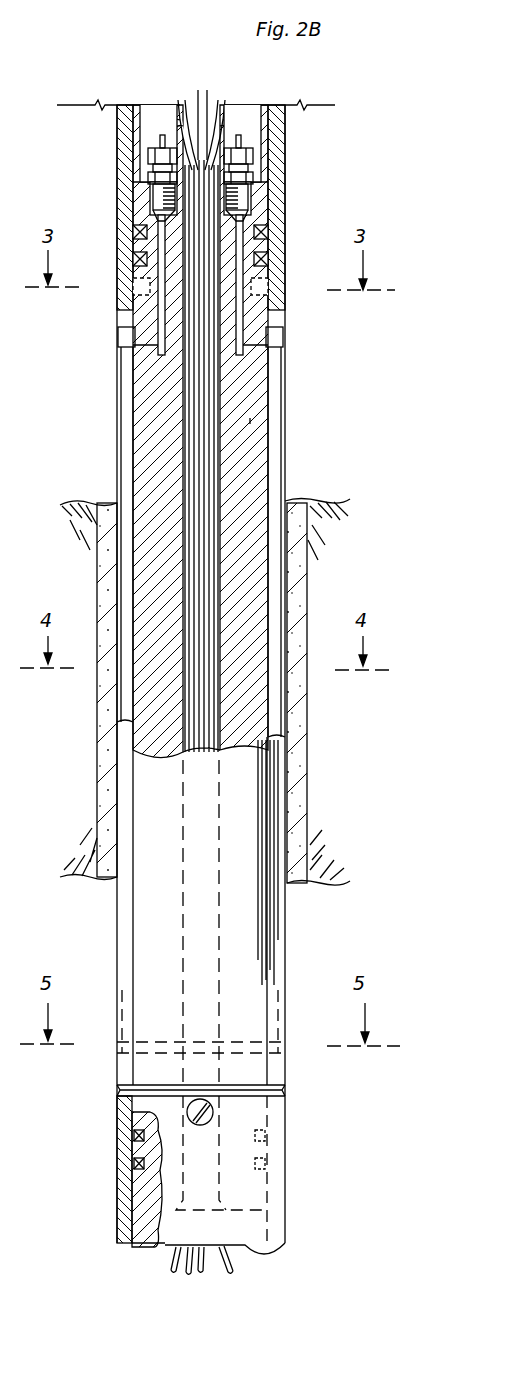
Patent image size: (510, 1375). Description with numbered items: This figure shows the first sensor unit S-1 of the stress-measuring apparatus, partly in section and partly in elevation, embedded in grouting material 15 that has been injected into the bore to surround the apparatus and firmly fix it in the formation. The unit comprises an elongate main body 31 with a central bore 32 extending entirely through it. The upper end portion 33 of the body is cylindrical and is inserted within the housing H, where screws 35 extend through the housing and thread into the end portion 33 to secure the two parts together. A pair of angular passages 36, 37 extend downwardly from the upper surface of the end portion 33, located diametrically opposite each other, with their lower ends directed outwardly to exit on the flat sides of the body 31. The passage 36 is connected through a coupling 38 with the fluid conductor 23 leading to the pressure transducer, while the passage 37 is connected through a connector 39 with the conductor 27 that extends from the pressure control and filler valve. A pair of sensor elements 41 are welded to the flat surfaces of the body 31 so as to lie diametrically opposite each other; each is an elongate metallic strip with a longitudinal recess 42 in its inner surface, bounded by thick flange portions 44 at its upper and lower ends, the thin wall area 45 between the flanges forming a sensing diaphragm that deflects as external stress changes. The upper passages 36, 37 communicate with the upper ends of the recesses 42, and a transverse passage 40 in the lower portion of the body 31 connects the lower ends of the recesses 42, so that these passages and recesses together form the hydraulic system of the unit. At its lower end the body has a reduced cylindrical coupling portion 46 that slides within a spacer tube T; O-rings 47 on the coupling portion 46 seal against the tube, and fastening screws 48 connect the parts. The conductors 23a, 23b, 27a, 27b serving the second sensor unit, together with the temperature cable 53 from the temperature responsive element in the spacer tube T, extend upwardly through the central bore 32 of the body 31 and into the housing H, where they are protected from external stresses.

The housing H is at (283, 190).
The grouting material 15 is at (300, 550).
The fluid conductor 23 is at (165, 138).
The conductor 23a is at (180, 100).
The conductor 23b is at (160, 118).
The conductor 27 is at (238, 136).
The fluid conductor 27a is at (228, 108).
The conductor 27b is at (253, 112).
The main body 31 is at (245, 388).
The central bore 32 is at (180, 400).
The end portion 33 is at (255, 283).
The screws 35 is at (130, 282).
The angular passage 36 is at (150, 333).
The angular passage 37 is at (240, 323).
The coupling 38 is at (150, 156).
The connector 39 is at (252, 158).
The transverse passage 40 is at (162, 1040).
The sensor elements 41 is at (110, 472).
The longitudinal recess 42 is at (128, 450).
The flange portions 44 is at (118, 335).
The sensing diaphragm 45 is at (117, 422).
The coupling portion 46 is at (142, 1188).
The O-rings 47 is at (132, 1137).
The fastening screws 48 is at (212, 1112).
The conductor 53 is at (203, 90).
The first sensor unit S-1 is at (255, 421).
The spacer tube T is at (283, 1190).